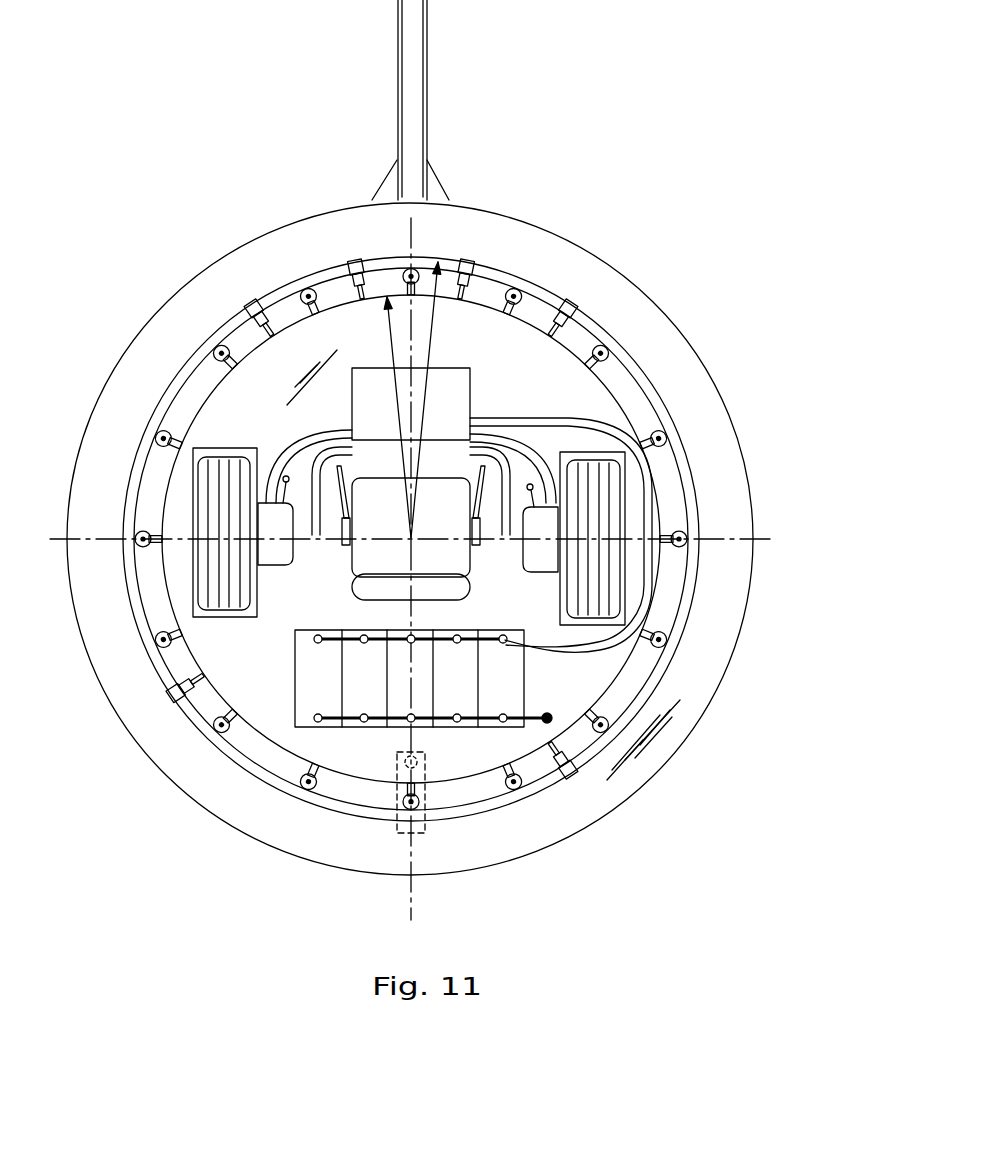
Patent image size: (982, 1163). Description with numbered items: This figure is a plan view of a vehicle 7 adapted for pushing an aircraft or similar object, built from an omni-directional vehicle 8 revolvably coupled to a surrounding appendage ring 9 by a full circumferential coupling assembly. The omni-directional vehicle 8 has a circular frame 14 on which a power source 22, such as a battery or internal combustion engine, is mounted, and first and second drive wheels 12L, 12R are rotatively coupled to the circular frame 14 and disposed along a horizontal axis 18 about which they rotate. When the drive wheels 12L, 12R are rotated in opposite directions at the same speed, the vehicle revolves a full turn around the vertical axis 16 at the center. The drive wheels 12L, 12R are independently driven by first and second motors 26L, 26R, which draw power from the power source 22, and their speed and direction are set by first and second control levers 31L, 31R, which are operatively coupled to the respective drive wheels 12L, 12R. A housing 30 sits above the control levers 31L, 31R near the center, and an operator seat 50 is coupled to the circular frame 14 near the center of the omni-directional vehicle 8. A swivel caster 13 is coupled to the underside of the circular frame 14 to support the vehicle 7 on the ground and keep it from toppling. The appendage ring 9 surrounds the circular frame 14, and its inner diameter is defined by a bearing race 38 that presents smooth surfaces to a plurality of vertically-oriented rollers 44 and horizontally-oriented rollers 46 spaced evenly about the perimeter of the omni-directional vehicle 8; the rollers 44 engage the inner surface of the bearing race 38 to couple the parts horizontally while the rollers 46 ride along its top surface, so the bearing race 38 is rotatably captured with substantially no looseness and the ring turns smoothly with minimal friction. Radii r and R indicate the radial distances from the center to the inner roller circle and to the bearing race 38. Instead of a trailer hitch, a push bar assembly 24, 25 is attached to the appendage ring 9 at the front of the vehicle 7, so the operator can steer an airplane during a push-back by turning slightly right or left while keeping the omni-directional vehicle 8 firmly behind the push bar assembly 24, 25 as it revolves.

The vehicle 7 is at (165, 878).
The omni-directional vehicle 8 is at (477, 315).
The appendage ring 9 is at (602, 258).
The first drive wheel 12L is at (228, 613).
The second drive wheel 12R is at (598, 618).
The swivel caster 13 is at (428, 767).
The circular frame 14 is at (652, 465).
The vertical axis 16 is at (413, 536).
The horizontal axis 18 is at (760, 539).
The power source 22 is at (525, 684).
The push bar assembly 24 is at (440, 175).
The push bar assembly 25 is at (427, 33).
The first motor 26L is at (282, 572).
The second motor 26R is at (547, 573).
The control box 30 is at (472, 407).
The first control lever 31L is at (338, 467).
The second control lever 31R is at (483, 467).
The bearing race 38 is at (550, 787).
The vertically-oriented roller 44 is at (313, 787).
The horizontally-oriented roller 46 is at (572, 773).
The operator seat 50 is at (470, 582).
The inner radius r is at (390, 340).
The outer radius R is at (440, 348).